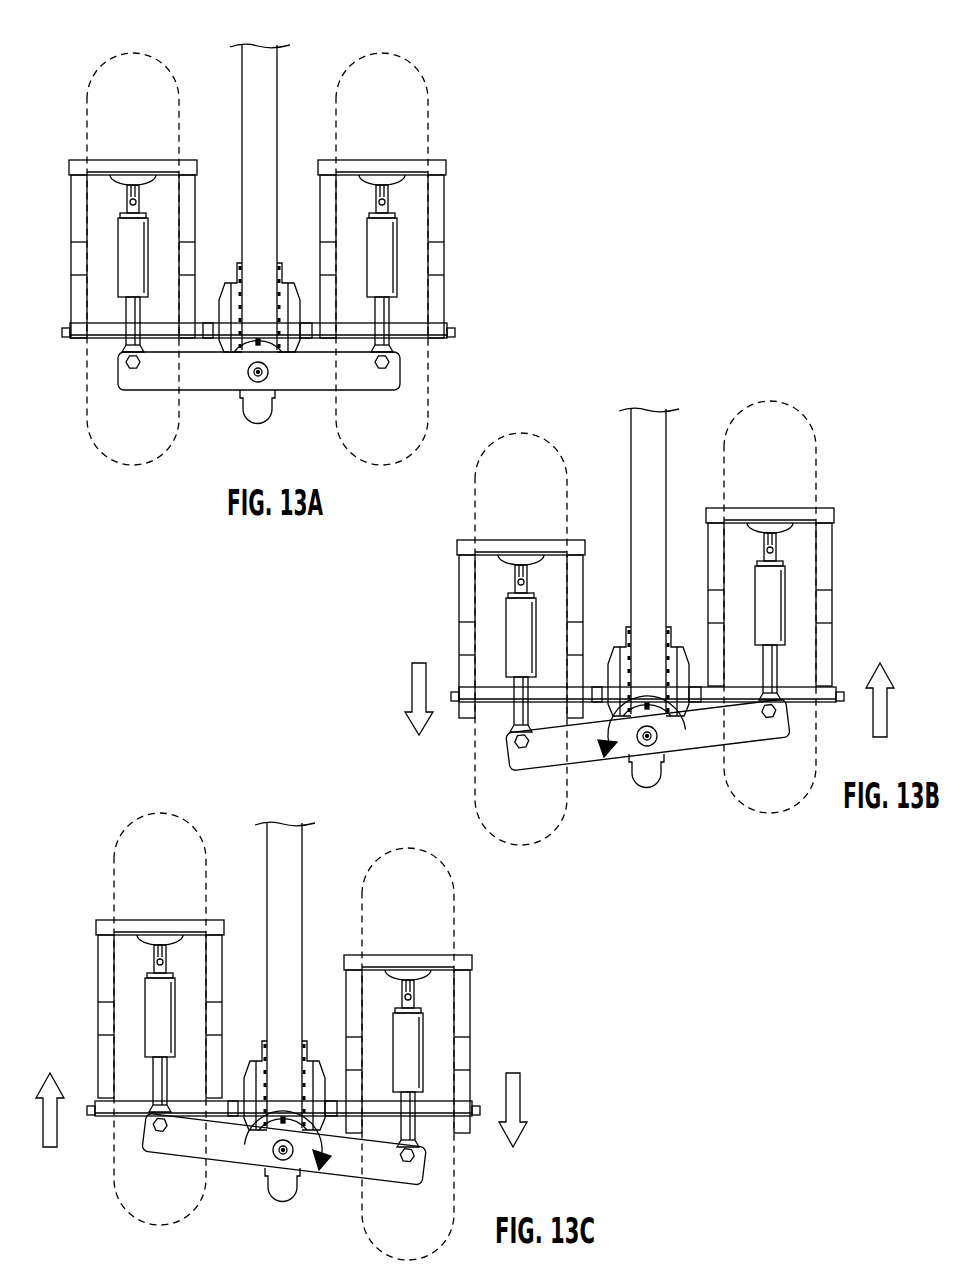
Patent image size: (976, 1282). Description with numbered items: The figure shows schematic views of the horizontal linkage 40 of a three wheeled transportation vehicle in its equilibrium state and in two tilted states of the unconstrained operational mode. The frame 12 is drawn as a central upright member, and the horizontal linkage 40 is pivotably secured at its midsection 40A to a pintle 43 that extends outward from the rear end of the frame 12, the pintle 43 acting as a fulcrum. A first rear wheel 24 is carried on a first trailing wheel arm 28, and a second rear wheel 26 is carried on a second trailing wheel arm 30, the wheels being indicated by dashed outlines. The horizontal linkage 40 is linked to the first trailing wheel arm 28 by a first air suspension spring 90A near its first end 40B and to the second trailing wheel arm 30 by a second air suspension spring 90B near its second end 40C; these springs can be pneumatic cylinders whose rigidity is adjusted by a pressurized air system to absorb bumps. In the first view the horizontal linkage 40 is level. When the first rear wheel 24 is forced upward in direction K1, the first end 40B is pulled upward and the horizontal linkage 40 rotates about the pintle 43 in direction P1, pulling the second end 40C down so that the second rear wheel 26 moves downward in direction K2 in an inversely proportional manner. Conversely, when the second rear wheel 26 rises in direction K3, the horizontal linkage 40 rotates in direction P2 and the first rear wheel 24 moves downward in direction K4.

In FIG. 13A, the frame 12 is at (273, 103).
In FIG. 13B, the frame 12 is at (650, 490).
In FIG. 13C, the frame 12 is at (292, 875).
In FIG. 13A, the first rear wheel 24 is at (379, 53).
In FIG. 13B, the first rear wheel 24 is at (768, 402).
In FIG. 13A, the second rear wheel 26 is at (134, 53).
In FIG. 13B, the second rear wheel 26 is at (522, 435).
In FIG. 13A, the first trailing wheel arm 28 is at (418, 158).
In FIG. 13A, the second trailing wheel arm 30 is at (98, 158).
In FIG. 13A, the first air suspension spring 90A is at (380, 257).
In FIG. 13B, the first air suspension spring 90A is at (773, 610).
In FIG. 13A, the second air suspension spring 90B is at (135, 257).
In FIG. 13B, the second air suspension spring 90B is at (524, 638).
In FIG. 13A, the horizontal linkage 40 is at (257, 408).
In FIG. 13B, the horizontal linkage 40 is at (555, 768).
In FIG. 13C, the horizontal linkage 40 is at (222, 1168).
In FIG. 13A, the midsection 40A is at (240, 380).
In FIG. 13A, the first end 40B is at (400, 380).
In FIG. 13A, the second end 40C is at (117, 377).
In FIG. 13A, the pintle 43 is at (257, 378).
In FIG. 13B, the pintle 43 is at (649, 745).
In FIG. 13C, the pintle 43 is at (285, 1158).
In FIG. 13B, the upward direction of first rear wheel K1 is at (887, 705).
In FIG. 13B, the downward direction of second rear wheel K2 is at (412, 680).
In FIG. 13C, the upward direction of second rear wheel K3 is at (50, 1150).
In FIG. 13C, the downward direction of first rear wheel K4 is at (521, 1095).
In FIG. 13B, the first pivot direction of horizontal linkage P1 is at (603, 748).
In FIG. 13C, the second pivot direction of horizontal linkage P2 is at (343, 1148).